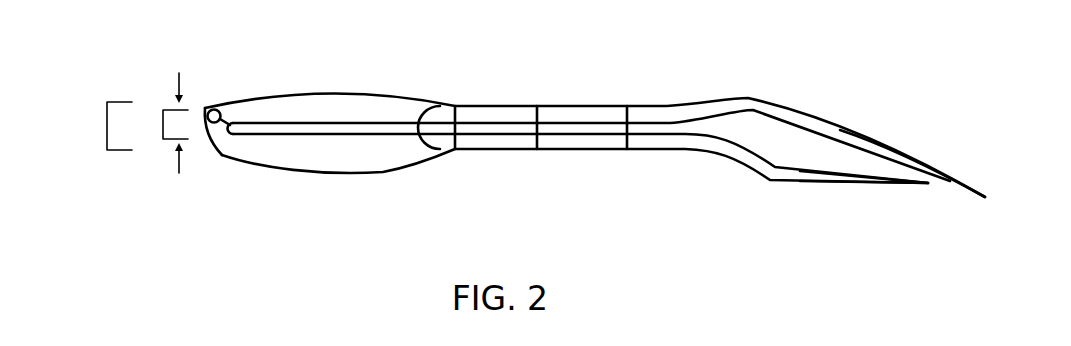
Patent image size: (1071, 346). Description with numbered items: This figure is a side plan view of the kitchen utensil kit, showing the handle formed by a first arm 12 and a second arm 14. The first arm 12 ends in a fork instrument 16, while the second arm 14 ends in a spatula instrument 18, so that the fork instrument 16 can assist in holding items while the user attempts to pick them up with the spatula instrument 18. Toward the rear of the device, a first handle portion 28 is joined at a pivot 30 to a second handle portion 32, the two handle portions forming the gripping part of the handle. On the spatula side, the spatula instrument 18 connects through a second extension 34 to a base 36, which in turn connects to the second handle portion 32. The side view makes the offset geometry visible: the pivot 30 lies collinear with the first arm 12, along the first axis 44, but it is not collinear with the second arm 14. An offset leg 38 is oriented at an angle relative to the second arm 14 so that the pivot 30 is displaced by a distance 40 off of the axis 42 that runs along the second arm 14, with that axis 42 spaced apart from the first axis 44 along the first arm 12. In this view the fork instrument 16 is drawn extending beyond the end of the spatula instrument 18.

The first arm 12 is at (670, 98).
The second arm 14 is at (675, 151).
The fork instrument 16 is at (866, 140).
The spatula instrument 18 is at (834, 175).
The first handle portion 28 is at (355, 104).
The pivot 30 is at (205, 103).
The second handle portion 32 is at (385, 166).
The second extension 34 is at (572, 143).
The base 36 is at (492, 143).
The offset leg 38 is at (209, 138).
The distance 40 is at (107, 127).
The axis 42 is at (178, 172).
The first axis 44 is at (163, 125).